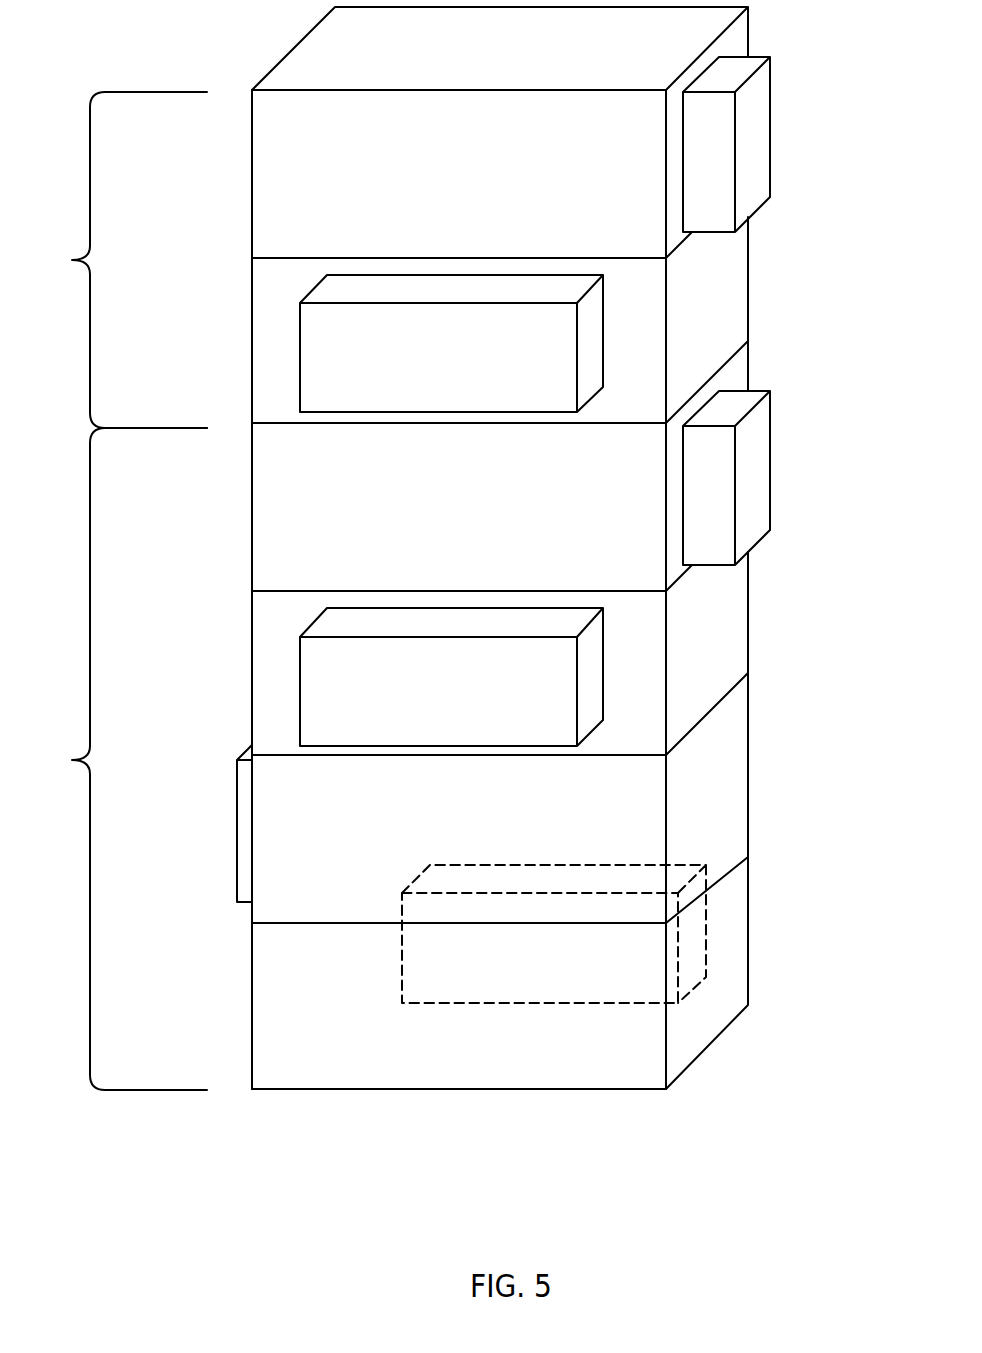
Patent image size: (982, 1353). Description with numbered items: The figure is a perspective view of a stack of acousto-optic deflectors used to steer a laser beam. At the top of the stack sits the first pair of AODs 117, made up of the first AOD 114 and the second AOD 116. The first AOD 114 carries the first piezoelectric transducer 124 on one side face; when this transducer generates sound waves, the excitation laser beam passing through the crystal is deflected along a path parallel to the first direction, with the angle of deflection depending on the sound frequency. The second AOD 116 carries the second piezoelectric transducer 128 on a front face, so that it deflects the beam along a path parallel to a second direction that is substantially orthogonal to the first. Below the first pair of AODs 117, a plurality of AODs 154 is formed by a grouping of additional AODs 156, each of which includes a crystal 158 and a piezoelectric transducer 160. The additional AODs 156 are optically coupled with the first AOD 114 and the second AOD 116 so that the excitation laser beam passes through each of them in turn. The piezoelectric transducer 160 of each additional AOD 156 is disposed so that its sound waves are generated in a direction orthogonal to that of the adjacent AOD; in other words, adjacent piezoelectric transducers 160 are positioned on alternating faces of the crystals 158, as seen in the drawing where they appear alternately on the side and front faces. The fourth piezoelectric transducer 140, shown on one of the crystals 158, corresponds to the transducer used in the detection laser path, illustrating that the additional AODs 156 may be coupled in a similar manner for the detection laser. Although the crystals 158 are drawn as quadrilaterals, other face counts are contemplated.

The first AOD 114 is at (252, 177).
The second AOD 116 is at (252, 337).
The first pair of AODs 117 is at (121, 260).
The first piezoelectric transducer 124 is at (750, 157).
The second piezoelectric transducer 128 is at (450, 373).
The fourth piezoelectric transducer 140 is at (454, 703).
The plurality of AODs 154 is at (121, 759).
The additional AODs 156 is at (252, 538).
The crystal 158 is at (498, 525).
The piezoelectric transducer 160 is at (750, 486).